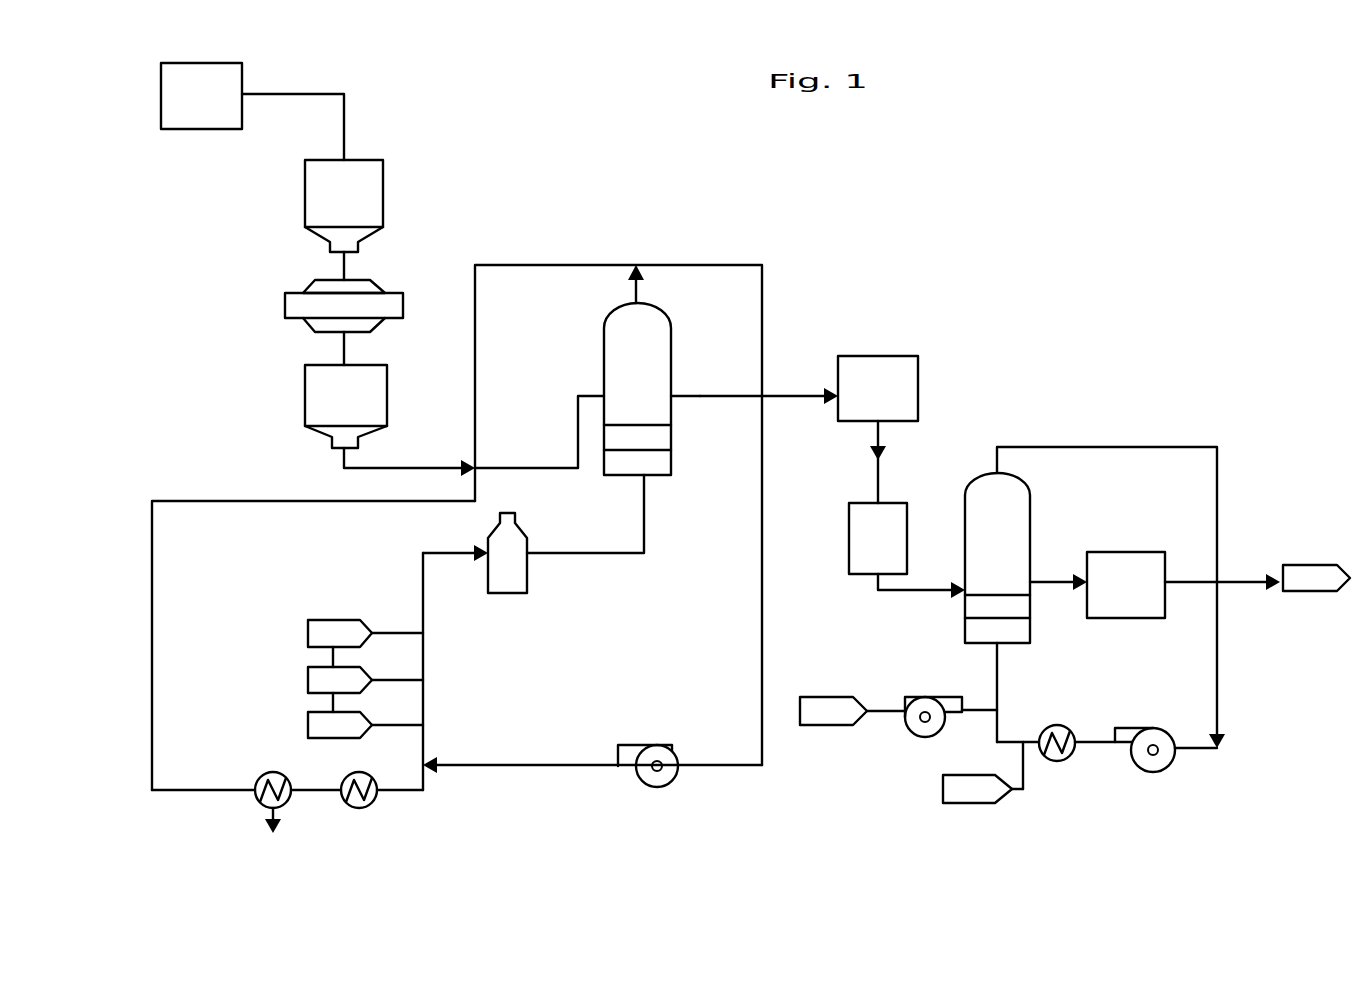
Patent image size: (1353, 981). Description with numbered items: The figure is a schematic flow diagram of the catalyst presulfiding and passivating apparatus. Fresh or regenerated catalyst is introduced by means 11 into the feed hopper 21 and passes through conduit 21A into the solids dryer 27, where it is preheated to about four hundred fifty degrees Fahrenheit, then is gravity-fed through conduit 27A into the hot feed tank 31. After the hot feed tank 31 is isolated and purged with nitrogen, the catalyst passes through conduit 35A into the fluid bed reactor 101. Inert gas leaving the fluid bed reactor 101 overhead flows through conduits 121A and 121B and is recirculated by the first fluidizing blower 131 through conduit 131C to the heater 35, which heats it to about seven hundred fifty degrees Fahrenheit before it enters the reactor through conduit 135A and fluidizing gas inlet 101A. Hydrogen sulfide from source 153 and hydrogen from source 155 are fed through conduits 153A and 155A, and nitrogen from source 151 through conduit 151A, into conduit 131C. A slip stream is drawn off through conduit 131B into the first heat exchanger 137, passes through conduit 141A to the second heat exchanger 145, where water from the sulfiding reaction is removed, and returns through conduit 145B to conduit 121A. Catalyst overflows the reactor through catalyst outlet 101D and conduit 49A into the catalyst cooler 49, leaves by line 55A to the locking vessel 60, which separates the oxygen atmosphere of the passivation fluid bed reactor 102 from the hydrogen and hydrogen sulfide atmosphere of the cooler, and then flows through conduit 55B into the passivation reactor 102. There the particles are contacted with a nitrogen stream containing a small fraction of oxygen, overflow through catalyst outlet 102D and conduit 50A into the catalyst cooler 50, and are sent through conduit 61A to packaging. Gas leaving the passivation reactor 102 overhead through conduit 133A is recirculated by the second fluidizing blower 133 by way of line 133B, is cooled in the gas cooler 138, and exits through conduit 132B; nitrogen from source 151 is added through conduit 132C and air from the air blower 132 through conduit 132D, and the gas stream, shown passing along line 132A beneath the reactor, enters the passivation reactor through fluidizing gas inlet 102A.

The means for passing catalyst 11 is at (188, 108).
The feed hopper 21 is at (331, 204).
The conduit 21A is at (346, 268).
The solids dryer 27 is at (403, 312).
The conduit 27A is at (346, 353).
The hot feed tank 31 is at (333, 409).
The conduit 35A is at (420, 451).
The heater 35 is at (528, 540).
The fluid bed reactor 101 is at (618, 376).
The fluidizing gas inlet 101A is at (672, 472).
The catalyst outlet 101D is at (673, 386).
The conduit 121A is at (762, 318).
The conduit 121B is at (638, 297).
The conduit 49A is at (816, 379).
The catalyst cooler 49 is at (865, 402).
The separator outlet line 55A is at (876, 487).
The locking vessel 60 is at (865, 549).
The conduit 55B is at (912, 592).
The passivation fluid bed reactor 102 is at (978, 549).
The fluidizing gas inlet 102A is at (1030, 630).
The catalyst outlet 102D is at (1032, 578).
The conduit 133A is at (1114, 431).
The catalyst cooler 50 is at (1140, 551).
The conduit 50A is at (1076, 587).
The conduit 61A is at (1254, 562).
The conduit 135A is at (645, 522).
The first fluidizing blower 131 is at (665, 732).
The conduit 131B is at (425, 777).
The conduit 131C is at (425, 750).
The nitrogen source 151 is at (306, 633).
The conduit 151A is at (410, 616).
The hydrogen sulfide source 153 is at (306, 680).
The conduit 153A is at (410, 663).
The hydrogen source 155 is at (306, 725).
The conduit 155A is at (410, 708).
The first heat exchanger 137 is at (380, 797).
The conduit 141A is at (331, 772).
The second heat exchanger 145 is at (256, 796).
The conduit 145B is at (158, 486).
The air blower 132 is at (897, 737).
The second reactor bottoms line 132A is at (995, 688).
The conduit 132B is at (1037, 727).
The conduit 132C is at (1023, 790).
The conduit 132D is at (985, 712).
The gas cooler 138 is at (1056, 761).
The second fluidizing blower 133 is at (1135, 772).
The compressor suction line 133B is at (1104, 727).